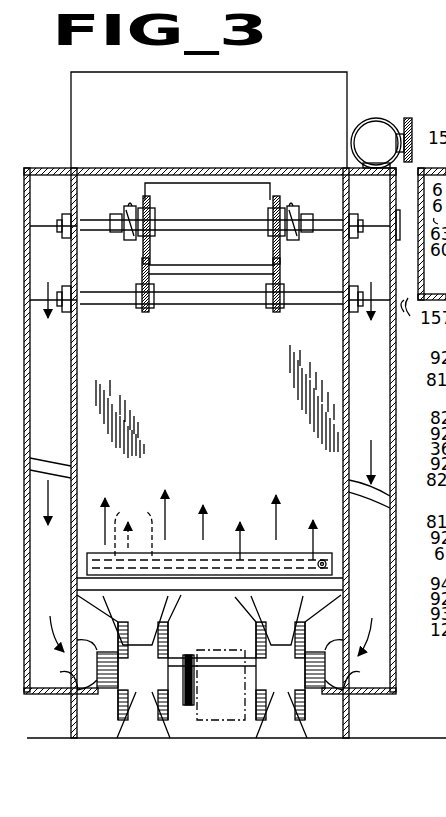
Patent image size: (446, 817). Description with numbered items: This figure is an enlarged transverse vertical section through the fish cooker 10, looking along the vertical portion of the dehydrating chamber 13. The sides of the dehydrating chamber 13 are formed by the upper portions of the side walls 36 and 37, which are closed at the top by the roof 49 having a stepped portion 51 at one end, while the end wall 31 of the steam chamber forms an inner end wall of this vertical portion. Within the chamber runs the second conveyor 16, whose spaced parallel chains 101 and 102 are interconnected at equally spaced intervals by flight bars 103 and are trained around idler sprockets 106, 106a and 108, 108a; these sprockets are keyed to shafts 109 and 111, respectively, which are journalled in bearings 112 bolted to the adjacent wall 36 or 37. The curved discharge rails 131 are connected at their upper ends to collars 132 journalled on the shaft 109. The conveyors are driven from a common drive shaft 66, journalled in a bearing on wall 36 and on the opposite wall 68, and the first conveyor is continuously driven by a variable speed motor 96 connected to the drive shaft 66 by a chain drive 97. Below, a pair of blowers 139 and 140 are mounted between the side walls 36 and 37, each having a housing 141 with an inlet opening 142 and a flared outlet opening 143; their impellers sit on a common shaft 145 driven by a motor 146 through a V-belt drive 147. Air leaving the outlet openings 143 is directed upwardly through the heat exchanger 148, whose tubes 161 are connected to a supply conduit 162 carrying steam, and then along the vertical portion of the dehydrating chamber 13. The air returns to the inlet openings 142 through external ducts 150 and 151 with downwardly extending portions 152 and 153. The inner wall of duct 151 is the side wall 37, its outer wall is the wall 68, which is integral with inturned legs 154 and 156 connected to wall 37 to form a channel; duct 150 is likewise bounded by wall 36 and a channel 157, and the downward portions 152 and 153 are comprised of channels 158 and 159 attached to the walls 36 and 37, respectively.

The fish cooker 10 is at (318, 70).
The dehydrating chamber 13 is at (228, 206).
The second conveyor 16 is at (165, 186).
The end wall 31 is at (214, 422).
The side wall 36 is at (78, 352).
The side wall 37 is at (345, 345).
The roof 49 is at (97, 72).
The stepped portion 51 is at (170, 98).
The drive shaft 66 is at (374, 228).
The wall 68 is at (388, 282).
The variable speed motor 96 is at (372, 120).
The chain drive 97 is at (412, 120).
The chain 101 is at (152, 197).
The chain 102 is at (268, 197).
The flight bars 103 is at (204, 192).
The idler sprocket 106 is at (281, 250).
The idler sprocket 106a is at (143, 249).
The idler sprocket 108 is at (281, 324).
The idler sprocket 108a is at (143, 320).
The shaft 109 is at (182, 226).
The shaft 111 is at (246, 302).
The bearings 112 is at (62, 222).
The curved discharge rails 131 is at (130, 204).
The collars 132 is at (118, 218).
The blower 139 is at (157, 672).
The blower 140 is at (294, 672).
The housing 141 is at (168, 638).
The inlet opening 142 is at (56, 692).
The flared outlet opening 143 is at (178, 590).
The common shaft 145 is at (212, 651).
The motor 146 is at (143, 715).
The V-belt drive 147 is at (195, 690).
The heat exchanger 148 is at (248, 550).
The external duct 150 is at (40, 168).
The external duct 151 is at (370, 168).
The downwardly extending portion 152 is at (77, 466).
The downwardly extending portion 153 is at (343, 492).
The inturned leg 154 is at (368, 186).
The inturned leg 156 is at (393, 300).
The channel 157 is at (32, 288).
The channel 158 is at (77, 478).
The channel 159 is at (343, 478).
The tubes 161 is at (133, 526).
The supply conduit 162 is at (332, 564).